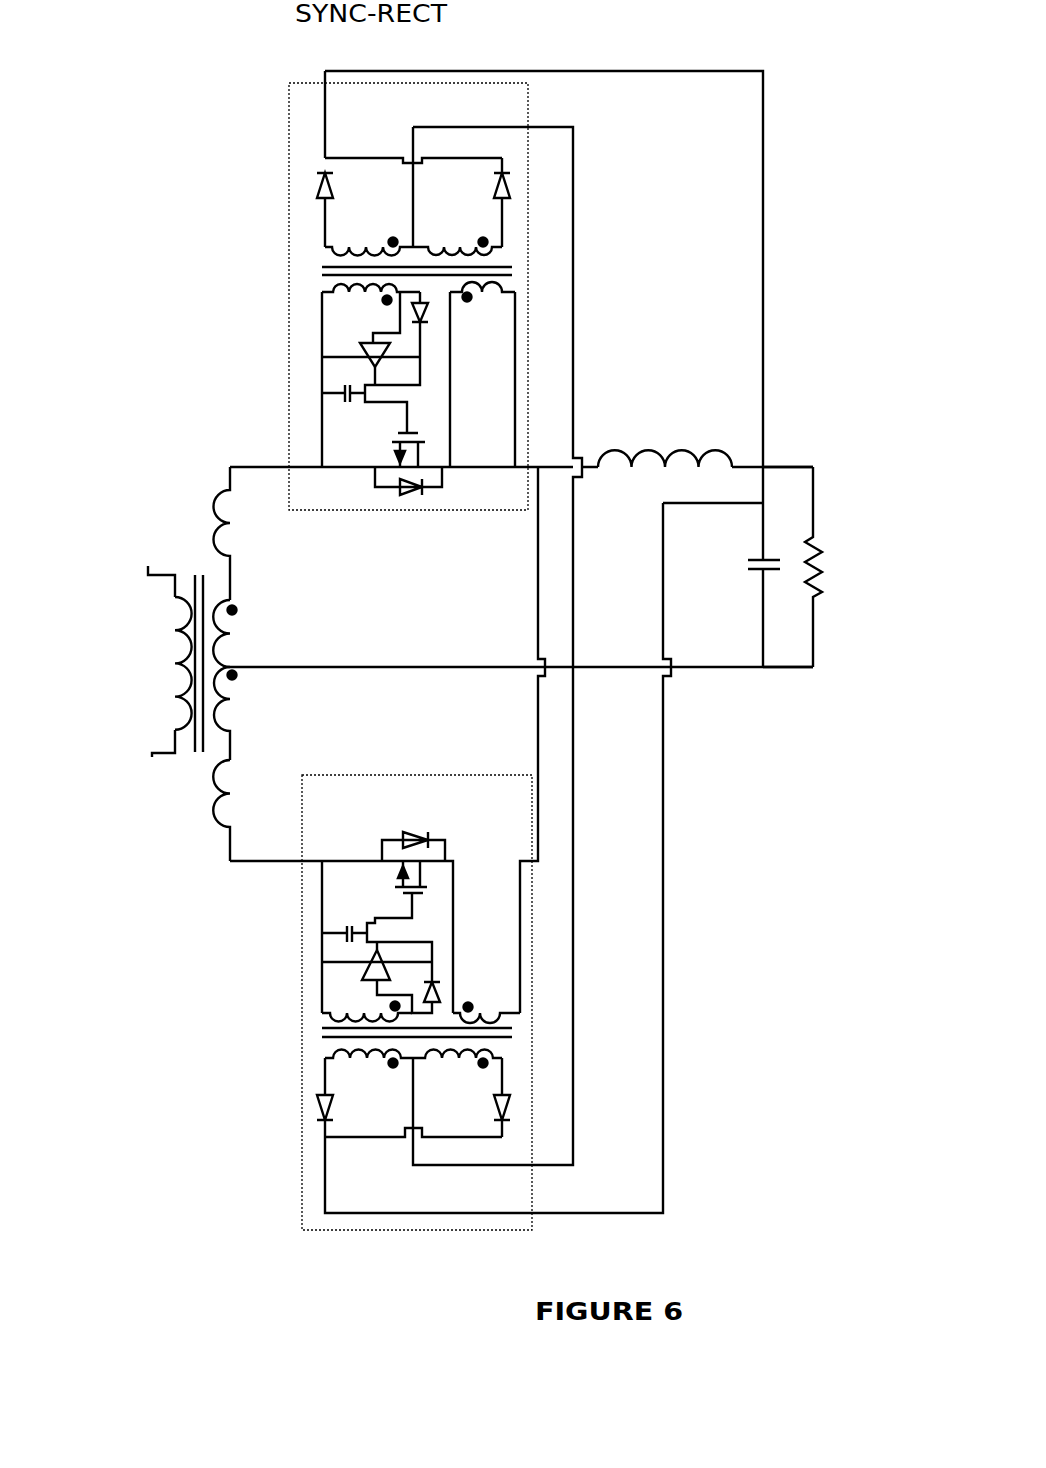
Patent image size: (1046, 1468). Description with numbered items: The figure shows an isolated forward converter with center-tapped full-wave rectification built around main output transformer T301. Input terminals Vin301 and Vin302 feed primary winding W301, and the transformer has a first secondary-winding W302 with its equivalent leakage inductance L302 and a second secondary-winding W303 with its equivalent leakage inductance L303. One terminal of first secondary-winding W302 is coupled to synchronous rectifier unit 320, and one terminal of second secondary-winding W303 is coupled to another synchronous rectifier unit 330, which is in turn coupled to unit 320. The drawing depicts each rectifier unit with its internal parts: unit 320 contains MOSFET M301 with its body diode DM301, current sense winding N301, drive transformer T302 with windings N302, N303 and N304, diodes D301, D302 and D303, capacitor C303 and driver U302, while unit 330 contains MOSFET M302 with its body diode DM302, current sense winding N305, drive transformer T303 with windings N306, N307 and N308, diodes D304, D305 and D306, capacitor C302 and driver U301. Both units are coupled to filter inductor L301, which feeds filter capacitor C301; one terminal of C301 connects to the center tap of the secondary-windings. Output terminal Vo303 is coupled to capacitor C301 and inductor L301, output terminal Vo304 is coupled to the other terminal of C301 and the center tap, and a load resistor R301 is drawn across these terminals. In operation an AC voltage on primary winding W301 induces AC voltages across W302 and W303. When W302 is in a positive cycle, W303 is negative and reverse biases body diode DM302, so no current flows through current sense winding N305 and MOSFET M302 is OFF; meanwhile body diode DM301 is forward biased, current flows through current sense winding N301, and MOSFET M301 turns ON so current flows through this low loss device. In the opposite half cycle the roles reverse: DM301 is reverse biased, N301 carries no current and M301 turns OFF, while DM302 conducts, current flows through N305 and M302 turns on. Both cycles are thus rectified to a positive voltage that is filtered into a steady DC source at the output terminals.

The synchronous rectifier unit 320 is at (284, 116).
The synchronous rectifier unit 330 is at (284, 1175).
The diode D301 is at (520, 200).
The diode D302 is at (308, 201).
The diode D303 is at (423, 328).
The diode D304 is at (517, 1107).
The diode D305 is at (310, 1105).
The diode D306 is at (437, 978).
The body diode DM301 is at (405, 493).
The body diode DM302 is at (463, 812).
The MOSFET M301 is at (385, 450).
The MOSFET M302 is at (390, 883).
The filter capacitor C301 is at (757, 575).
The capacitor C302 is at (347, 922).
The capacitor C303 is at (345, 403).
The driver U301 is at (360, 957).
The driver U302 is at (362, 367).
The current sense winding N301 is at (483, 295).
The winding N302 is at (352, 293).
The winding N303 is at (448, 245).
The winding N304 is at (372, 238).
The current sense winding N305 is at (487, 1010).
The winding N306 is at (357, 1008).
The winding N307 is at (443, 1063).
The winding N308 is at (368, 1068).
The transformer T301 is at (200, 562).
The drive transformer T302 is at (310, 268).
The drive transformer T303 is at (312, 1033).
The primary winding W301 is at (175, 673).
The first secondary-winding W302 is at (237, 637).
The second secondary-winding W303 is at (228, 678).
The filter inductor L301 is at (693, 432).
The equivalent leakage inductance L302 is at (230, 502).
The equivalent leakage inductance L303 is at (257, 790).
The load resistor R301 is at (830, 568).
The input terminal Vin301 is at (148, 568).
The input terminal Vin302 is at (152, 752).
The output terminal Vo303 is at (825, 438).
The output terminal Vo304 is at (792, 685).